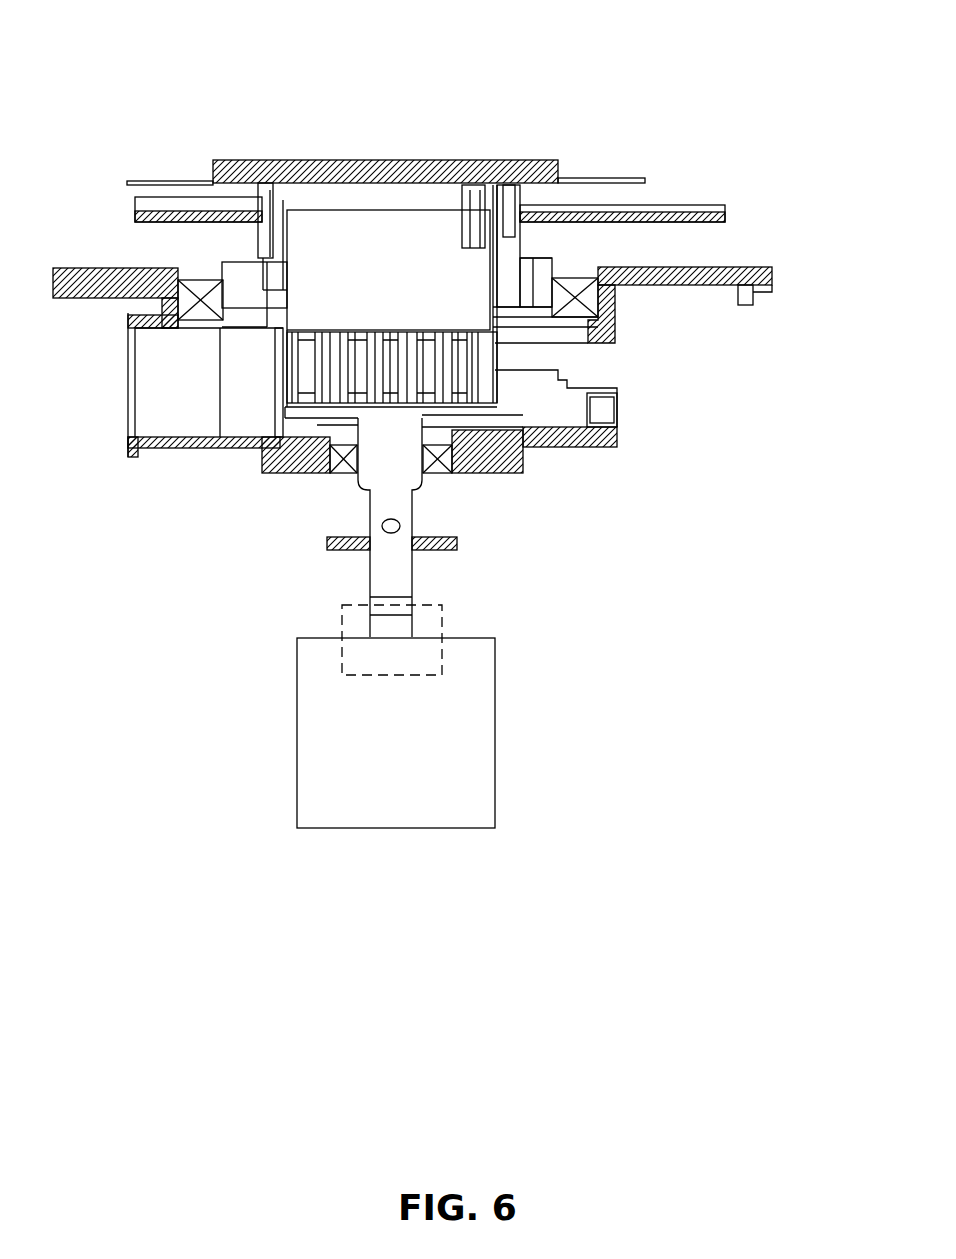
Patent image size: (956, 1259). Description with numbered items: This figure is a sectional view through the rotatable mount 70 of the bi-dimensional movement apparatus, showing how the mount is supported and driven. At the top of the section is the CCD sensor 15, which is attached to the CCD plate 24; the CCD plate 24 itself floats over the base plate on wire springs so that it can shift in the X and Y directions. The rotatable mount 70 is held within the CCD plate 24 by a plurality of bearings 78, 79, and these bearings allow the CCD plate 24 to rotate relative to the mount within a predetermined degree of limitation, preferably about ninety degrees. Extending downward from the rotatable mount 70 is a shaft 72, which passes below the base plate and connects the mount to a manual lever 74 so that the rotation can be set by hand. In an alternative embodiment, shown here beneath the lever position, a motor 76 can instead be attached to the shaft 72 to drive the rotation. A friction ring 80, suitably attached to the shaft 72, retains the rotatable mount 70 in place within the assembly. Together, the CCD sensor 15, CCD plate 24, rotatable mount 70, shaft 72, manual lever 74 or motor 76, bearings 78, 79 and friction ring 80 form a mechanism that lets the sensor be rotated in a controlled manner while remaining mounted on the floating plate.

The CCD sensor 15 is at (328, 162).
The CCD plate 24 is at (747, 268).
The rotatable mount 70 is at (380, 462).
The shaft 72 is at (390, 561).
The manual lever 74 is at (353, 615).
The motor 76 is at (377, 782).
The bearing 78 is at (455, 547).
The bearing 79 is at (202, 310).
The friction ring 80 is at (460, 470).